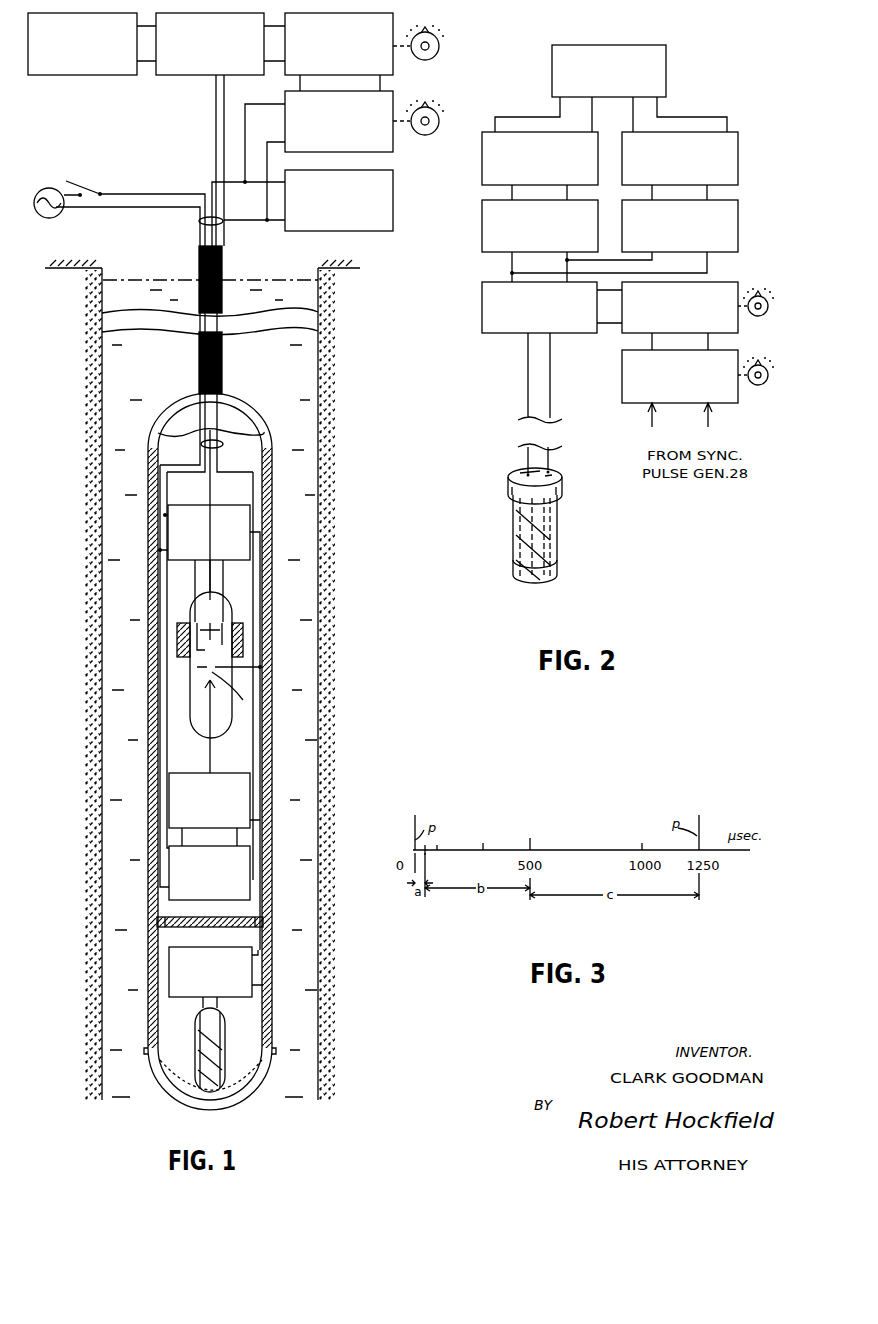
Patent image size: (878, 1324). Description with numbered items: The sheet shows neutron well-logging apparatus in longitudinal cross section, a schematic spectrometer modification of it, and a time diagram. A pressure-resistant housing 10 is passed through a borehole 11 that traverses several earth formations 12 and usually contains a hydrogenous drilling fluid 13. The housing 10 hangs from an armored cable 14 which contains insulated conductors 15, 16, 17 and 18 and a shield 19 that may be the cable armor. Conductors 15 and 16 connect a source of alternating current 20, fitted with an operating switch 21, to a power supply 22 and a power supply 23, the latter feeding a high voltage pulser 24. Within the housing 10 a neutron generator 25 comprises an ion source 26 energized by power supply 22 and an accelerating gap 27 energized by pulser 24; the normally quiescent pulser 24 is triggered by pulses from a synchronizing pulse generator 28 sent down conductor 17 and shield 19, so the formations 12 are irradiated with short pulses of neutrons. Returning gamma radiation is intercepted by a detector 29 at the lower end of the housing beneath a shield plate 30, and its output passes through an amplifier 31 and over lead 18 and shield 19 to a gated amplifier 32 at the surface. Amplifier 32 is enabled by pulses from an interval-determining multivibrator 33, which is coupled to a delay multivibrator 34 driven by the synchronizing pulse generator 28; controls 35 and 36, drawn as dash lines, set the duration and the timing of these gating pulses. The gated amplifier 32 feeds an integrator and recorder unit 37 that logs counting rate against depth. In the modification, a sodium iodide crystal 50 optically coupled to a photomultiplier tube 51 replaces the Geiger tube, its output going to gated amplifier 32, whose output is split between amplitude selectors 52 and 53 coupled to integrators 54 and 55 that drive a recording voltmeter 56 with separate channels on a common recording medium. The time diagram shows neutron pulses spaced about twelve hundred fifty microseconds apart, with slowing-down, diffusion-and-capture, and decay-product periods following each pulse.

In FIG. 1, the pressure-resistant housing 10 is at (156, 424).
In FIG. 1, the borehole 11 is at (312, 288).
In FIG. 1, the earth formations 12 is at (58, 493).
In FIG. 1, the hydrogenous drilling fluid 13 is at (160, 278).
In FIG. 1, the armored cable 14 is at (199, 260).
In FIG. 1, the insulated conductor 15 is at (170, 212).
In FIG. 1, the insulated conductor 16 is at (188, 194).
In FIG. 1, the insulated conductor 17 is at (210, 186).
In FIG. 1, the insulated conductor 18 is at (214, 152).
In FIG. 1, the shield 19 is at (220, 226).
In FIG. 1, the source of alternating current 20 is at (40, 181).
In FIG. 1, the operating switch 21 is at (77, 184).
In FIG. 1, the power supply 22 is at (232, 560).
In FIG. 1, the power supply 23 is at (250, 880).
In FIG. 1, the high voltage pulser 24 is at (196, 773).
In FIG. 1, the neutron generator 25 is at (166, 709).
In FIG. 1, the ion source 26 is at (200, 622).
In FIG. 1, the accelerating gap 27 is at (232, 694).
In FIG. 1, the synchronizing pulse generator 28 is at (318, 231).
In FIG. 1, the detector 29 is at (222, 1068).
In FIG. 1, the shield plate 30 is at (166, 917).
In FIG. 1, the amplifier 31 is at (196, 999).
In FIG. 1, the gated amplifier 32 is at (198, 75).
In FIG. 2, the gated amplifier 32 is at (512, 335).
In FIG. 1, the interval-determining multivibrator 33 is at (293, 77).
In FIG. 2, the interval-determining multivibrator 33 is at (715, 281).
In FIG. 1, the delay multivibrator 34 is at (393, 139).
In FIG. 2, the delay multivibrator 34 is at (622, 365).
In FIG. 1, the control 35 is at (435, 57).
In FIG. 2, the control 35 is at (766, 313).
In FIG. 1, the control 36 is at (436, 111).
In FIG. 2, the control 36 is at (766, 382).
In FIG. 1, the integrator and recorder unit 37 is at (60, 75).
In FIG. 2, the sodium iodide crystal 50 is at (560, 572).
In FIG. 2, the photomultiplier tube 51 is at (560, 522).
In FIG. 2, the amplitude selector 52 is at (482, 234).
In FIG. 2, the amplitude selector 53 is at (738, 240).
In FIG. 2, the integrator 54 is at (598, 146).
In FIG. 2, the integrator 55 is at (738, 172).
In FIG. 2, the recording voltmeter 56 is at (667, 78).